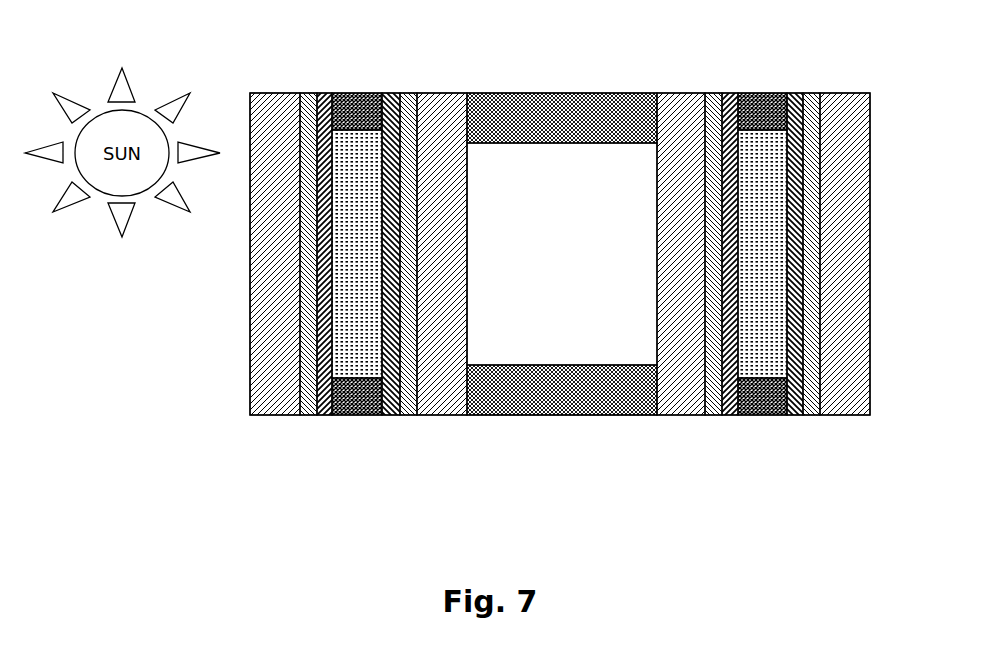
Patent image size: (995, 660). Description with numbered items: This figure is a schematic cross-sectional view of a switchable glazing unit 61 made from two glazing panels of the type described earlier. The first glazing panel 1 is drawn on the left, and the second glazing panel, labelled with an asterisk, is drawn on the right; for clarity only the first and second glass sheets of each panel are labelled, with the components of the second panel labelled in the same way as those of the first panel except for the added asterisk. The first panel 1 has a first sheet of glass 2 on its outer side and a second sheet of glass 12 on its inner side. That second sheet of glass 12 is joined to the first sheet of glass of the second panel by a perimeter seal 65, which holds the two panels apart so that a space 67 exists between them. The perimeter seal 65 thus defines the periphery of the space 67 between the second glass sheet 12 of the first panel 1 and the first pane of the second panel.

The switchable glazing unit 61 is at (185, 398).
The glazing panel 1 is at (358, 264).
The first sheet of glass 2 is at (267, 100).
The second sheet of glass 12 is at (440, 97).
The perimeter seal 65 is at (555, 100).
The space 67 is at (562, 254).